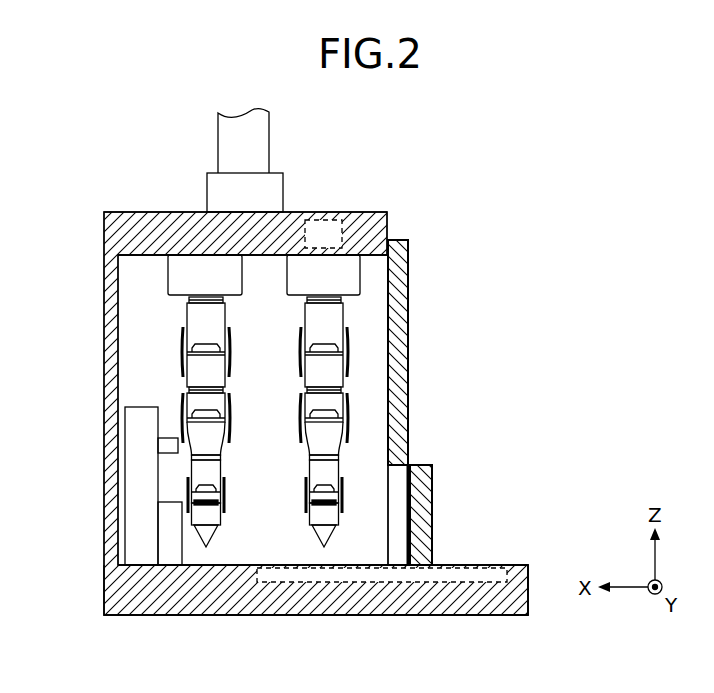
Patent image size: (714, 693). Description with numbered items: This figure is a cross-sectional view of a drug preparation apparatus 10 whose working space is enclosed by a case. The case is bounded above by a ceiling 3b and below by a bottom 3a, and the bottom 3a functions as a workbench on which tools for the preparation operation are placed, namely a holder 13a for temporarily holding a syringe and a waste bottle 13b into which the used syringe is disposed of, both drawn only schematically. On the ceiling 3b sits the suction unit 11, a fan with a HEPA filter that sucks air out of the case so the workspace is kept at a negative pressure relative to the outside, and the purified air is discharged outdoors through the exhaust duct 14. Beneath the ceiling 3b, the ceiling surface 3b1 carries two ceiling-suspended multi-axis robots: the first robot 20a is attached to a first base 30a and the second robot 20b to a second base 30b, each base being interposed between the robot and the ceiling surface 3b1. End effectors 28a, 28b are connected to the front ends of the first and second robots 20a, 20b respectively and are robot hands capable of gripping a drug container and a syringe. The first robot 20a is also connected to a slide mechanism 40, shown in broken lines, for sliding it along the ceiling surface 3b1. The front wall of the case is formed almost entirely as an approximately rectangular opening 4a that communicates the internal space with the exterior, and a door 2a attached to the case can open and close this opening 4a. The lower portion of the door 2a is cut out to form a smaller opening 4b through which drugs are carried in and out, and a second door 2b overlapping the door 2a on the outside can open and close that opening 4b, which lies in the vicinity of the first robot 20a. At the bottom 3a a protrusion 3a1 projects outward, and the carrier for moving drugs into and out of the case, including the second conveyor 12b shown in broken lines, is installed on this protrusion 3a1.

The component mounting apparatus 10 is at (287, 384).
The ceiling 3b is at (165, 222).
The ceiling surface 3b1 is at (151, 256).
The bottom 3a is at (254, 612).
The protrusion 3a1 is at (518, 612).
The exhaust duct 14 is at (268, 146).
The suction unit 11 is at (282, 190).
The slide mechanism 40 is at (330, 220).
The opening 4a is at (378, 266).
The opening 4b is at (378, 546).
The door 2a is at (396, 240).
The door 2b is at (432, 487).
The first base 30a is at (355, 280).
The second base 30b is at (168, 284).
The first robot 20a is at (373, 427).
The second robot 20b is at (168, 422).
The end effector 28a is at (320, 540).
The end effector 28b is at (212, 546).
The holder 13a is at (125, 447).
The waste bottle 13b is at (168, 558).
The second conveyor 12b is at (458, 584).